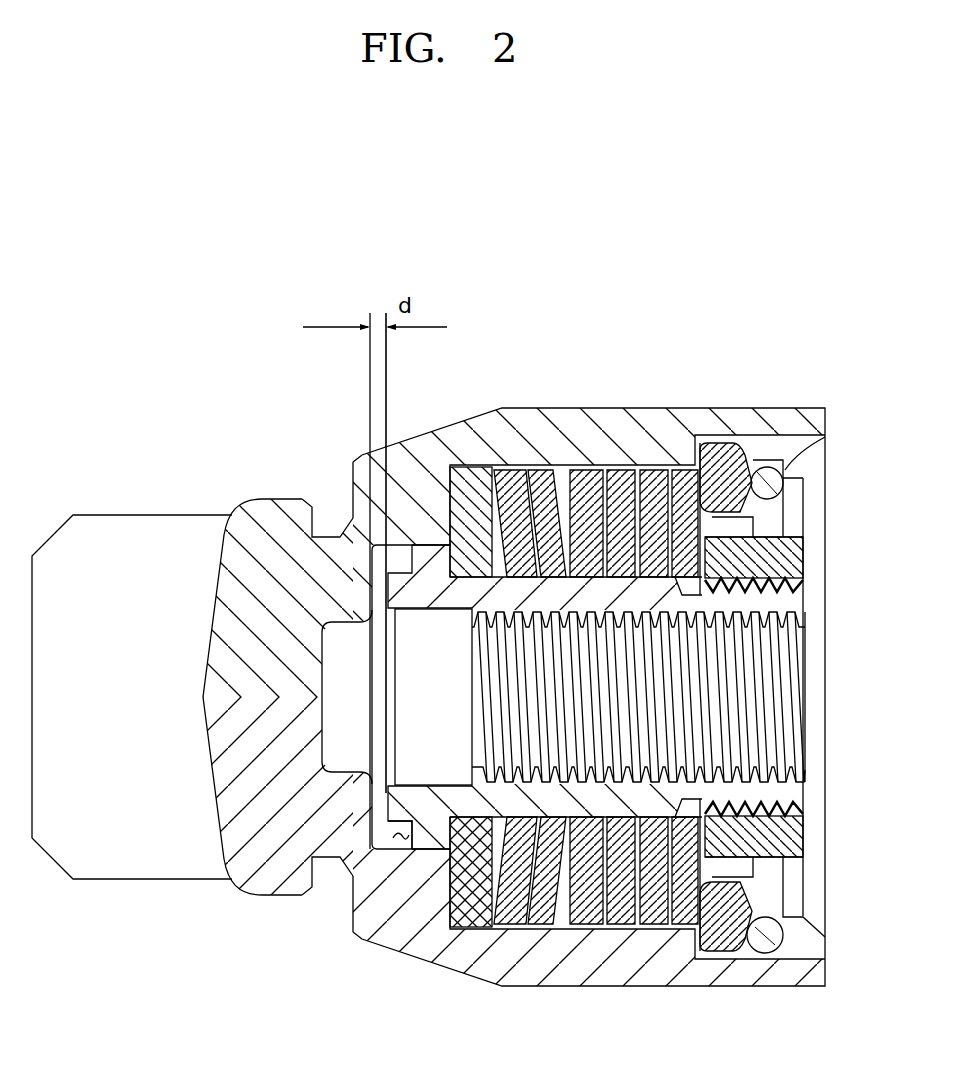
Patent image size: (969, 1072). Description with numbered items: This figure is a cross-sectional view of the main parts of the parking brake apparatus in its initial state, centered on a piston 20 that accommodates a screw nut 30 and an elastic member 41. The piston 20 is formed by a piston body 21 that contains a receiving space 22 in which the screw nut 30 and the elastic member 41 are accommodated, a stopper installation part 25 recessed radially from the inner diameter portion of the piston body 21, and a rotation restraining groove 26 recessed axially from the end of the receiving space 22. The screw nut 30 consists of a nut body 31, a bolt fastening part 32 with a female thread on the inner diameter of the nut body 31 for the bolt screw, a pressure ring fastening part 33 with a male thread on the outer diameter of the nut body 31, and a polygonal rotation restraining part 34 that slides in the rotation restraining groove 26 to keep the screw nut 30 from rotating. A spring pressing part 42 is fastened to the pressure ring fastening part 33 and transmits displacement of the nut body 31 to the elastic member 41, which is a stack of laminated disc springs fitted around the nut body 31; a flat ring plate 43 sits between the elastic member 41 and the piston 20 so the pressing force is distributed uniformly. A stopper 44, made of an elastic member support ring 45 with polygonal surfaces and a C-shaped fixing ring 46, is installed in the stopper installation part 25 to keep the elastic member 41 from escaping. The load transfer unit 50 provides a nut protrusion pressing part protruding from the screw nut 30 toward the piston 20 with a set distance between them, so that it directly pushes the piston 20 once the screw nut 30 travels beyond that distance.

The piston 20 is at (352, 453).
The piston body 21 is at (603, 962).
The receiving space 22 is at (562, 897).
The stopper installation part 25 is at (797, 466).
The rotation restraining groove 26 is at (403, 839).
The screw nut 30 is at (637, 828).
The nut body 31 is at (548, 595).
The bolt fastening part 32 is at (760, 722).
The pressure ring fastening part 33 is at (787, 832).
The rotation restraining part 34 is at (423, 557).
The elastic member 41 is at (618, 483).
The spring pressing part 42 is at (777, 553).
The ring plate 43 is at (477, 483).
The stopper 44 is at (743, 631).
The elastic member support ring 45 is at (718, 458).
The fixing ring 46 is at (767, 467).
The load transfer unit 50 is at (382, 812).